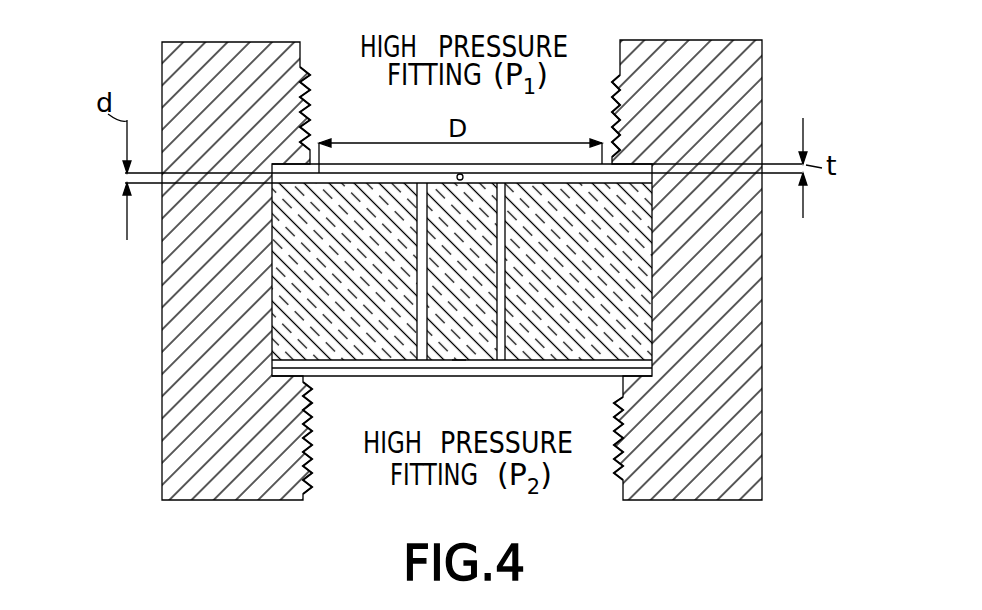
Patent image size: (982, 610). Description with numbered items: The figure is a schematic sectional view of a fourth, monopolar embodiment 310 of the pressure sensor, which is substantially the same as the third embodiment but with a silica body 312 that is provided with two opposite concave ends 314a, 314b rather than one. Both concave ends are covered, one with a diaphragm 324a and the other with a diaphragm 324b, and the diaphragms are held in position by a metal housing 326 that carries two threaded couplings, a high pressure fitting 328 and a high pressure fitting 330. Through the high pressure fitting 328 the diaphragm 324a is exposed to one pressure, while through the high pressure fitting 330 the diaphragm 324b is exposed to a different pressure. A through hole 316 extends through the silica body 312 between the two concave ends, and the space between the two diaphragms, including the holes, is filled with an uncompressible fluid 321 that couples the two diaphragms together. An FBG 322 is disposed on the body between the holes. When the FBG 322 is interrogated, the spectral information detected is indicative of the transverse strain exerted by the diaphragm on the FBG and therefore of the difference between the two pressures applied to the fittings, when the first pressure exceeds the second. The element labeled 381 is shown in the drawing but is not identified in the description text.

The fourth monopolar embodiment 310 is at (210, 547).
The silica body 312 is at (643, 290).
The concave end 314a is at (513, 182).
The concave end 314b is at (287, 327).
The through hole 316 is at (418, 320).
The uncompressible fluid 321 is at (458, 360).
The FBG 322 is at (457, 180).
The diaphragm 324a is at (657, 163).
The diaphragm 324b is at (652, 373).
The metal housing 326 is at (698, 497).
The high pressure fitting 328 is at (312, 87).
The high pressure fitting 330 is at (308, 447).
The second electrode 381 is at (500, 322).